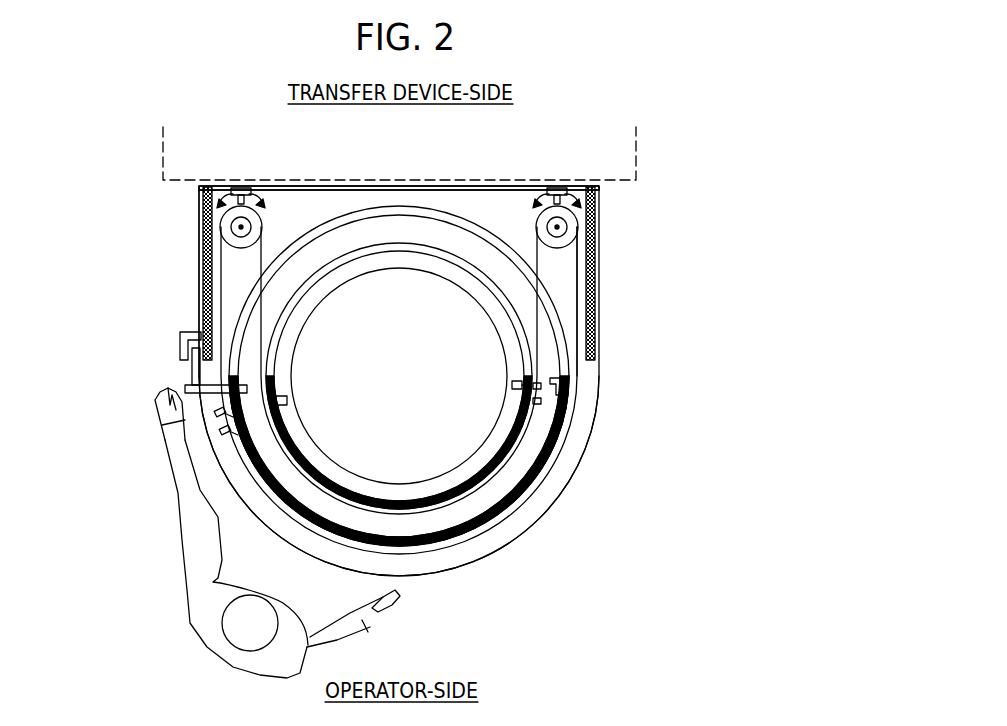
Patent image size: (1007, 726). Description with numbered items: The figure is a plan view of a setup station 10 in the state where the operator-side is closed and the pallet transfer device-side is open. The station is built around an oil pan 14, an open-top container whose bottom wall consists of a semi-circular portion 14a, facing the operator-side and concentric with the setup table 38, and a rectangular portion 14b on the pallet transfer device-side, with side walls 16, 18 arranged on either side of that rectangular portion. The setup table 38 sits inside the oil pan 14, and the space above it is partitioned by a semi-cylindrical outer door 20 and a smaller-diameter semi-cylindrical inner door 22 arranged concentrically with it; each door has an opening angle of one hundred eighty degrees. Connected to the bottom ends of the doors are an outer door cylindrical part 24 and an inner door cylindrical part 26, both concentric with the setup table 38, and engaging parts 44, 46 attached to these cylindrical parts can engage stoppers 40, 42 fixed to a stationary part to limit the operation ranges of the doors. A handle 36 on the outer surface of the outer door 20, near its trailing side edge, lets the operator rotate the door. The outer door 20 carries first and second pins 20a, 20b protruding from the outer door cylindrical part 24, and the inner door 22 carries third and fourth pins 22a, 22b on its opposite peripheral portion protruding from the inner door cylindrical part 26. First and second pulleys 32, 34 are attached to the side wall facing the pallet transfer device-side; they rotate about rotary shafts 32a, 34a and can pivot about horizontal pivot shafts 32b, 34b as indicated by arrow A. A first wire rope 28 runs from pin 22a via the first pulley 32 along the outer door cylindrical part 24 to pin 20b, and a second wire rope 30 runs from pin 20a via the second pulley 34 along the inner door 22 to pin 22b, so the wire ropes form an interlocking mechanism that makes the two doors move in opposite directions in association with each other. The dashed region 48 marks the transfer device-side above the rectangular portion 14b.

The setup station 10 is at (724, 110).
The oil pan 14 is at (525, 537).
The semi-circular portion 14a is at (425, 573).
The rectangular portion 14b is at (308, 198).
The side wall 16 is at (596, 310).
The side wall 18 is at (210, 277).
The outer door 20 is at (478, 480).
The first pin 20a is at (217, 412).
The second pin 20b is at (225, 430).
The inner door 22 is at (447, 541).
The third pin 22a is at (593, 345).
The fourth pin 22b is at (585, 457).
The outer door cylindrical part 24 is at (433, 212).
The inner door cylindrical part 26 is at (385, 244).
The first wire rope 28 is at (497, 482).
The second wire rope 30 is at (550, 473).
The first pulley 32 is at (576, 230).
The rotary shaft 32a is at (557, 227).
The pivot shaft 32b is at (556, 190).
The second pulley 34 is at (221, 233).
The rotary shaft 34a is at (241, 227).
The pivot shaft 34b is at (243, 190).
The handle 36 is at (187, 385).
The setup table 38 is at (413, 324).
The stopper 40 is at (593, 408).
The stopper 42 is at (278, 398).
The engaging part 44 is at (200, 313).
The engaging part 46 is at (515, 383).
The transfer device region 48 is at (636, 158).
The arrow A is at (259, 192).